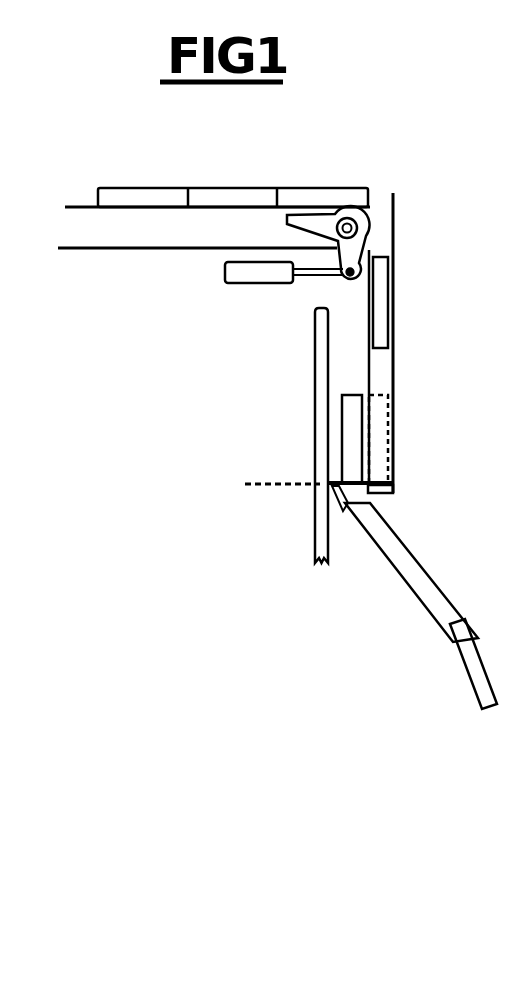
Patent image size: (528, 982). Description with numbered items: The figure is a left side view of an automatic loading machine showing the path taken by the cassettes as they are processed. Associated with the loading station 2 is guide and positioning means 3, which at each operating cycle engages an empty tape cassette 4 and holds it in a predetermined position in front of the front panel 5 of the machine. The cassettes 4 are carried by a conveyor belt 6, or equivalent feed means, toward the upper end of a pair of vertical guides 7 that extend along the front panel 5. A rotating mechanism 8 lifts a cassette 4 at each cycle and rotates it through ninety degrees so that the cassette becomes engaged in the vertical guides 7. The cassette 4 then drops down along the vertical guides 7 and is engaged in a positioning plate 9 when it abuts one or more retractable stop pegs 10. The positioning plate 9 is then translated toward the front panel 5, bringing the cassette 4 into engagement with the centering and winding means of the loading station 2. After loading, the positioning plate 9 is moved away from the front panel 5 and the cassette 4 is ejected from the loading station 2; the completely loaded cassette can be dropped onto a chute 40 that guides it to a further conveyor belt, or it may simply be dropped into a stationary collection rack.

The loading station 2 is at (425, 412).
The guide and positioning means 3 is at (402, 208).
The tape cassette 4 is at (147, 192).
The front panel 5 is at (312, 545).
The conveyor belt 6 is at (72, 203).
The vertical guides 7 is at (371, 252).
The rotating mechanism 8 is at (317, 277).
The positioning plate 9 is at (395, 485).
The retractable stop pegs 10 is at (267, 497).
The chute 40 is at (420, 580).